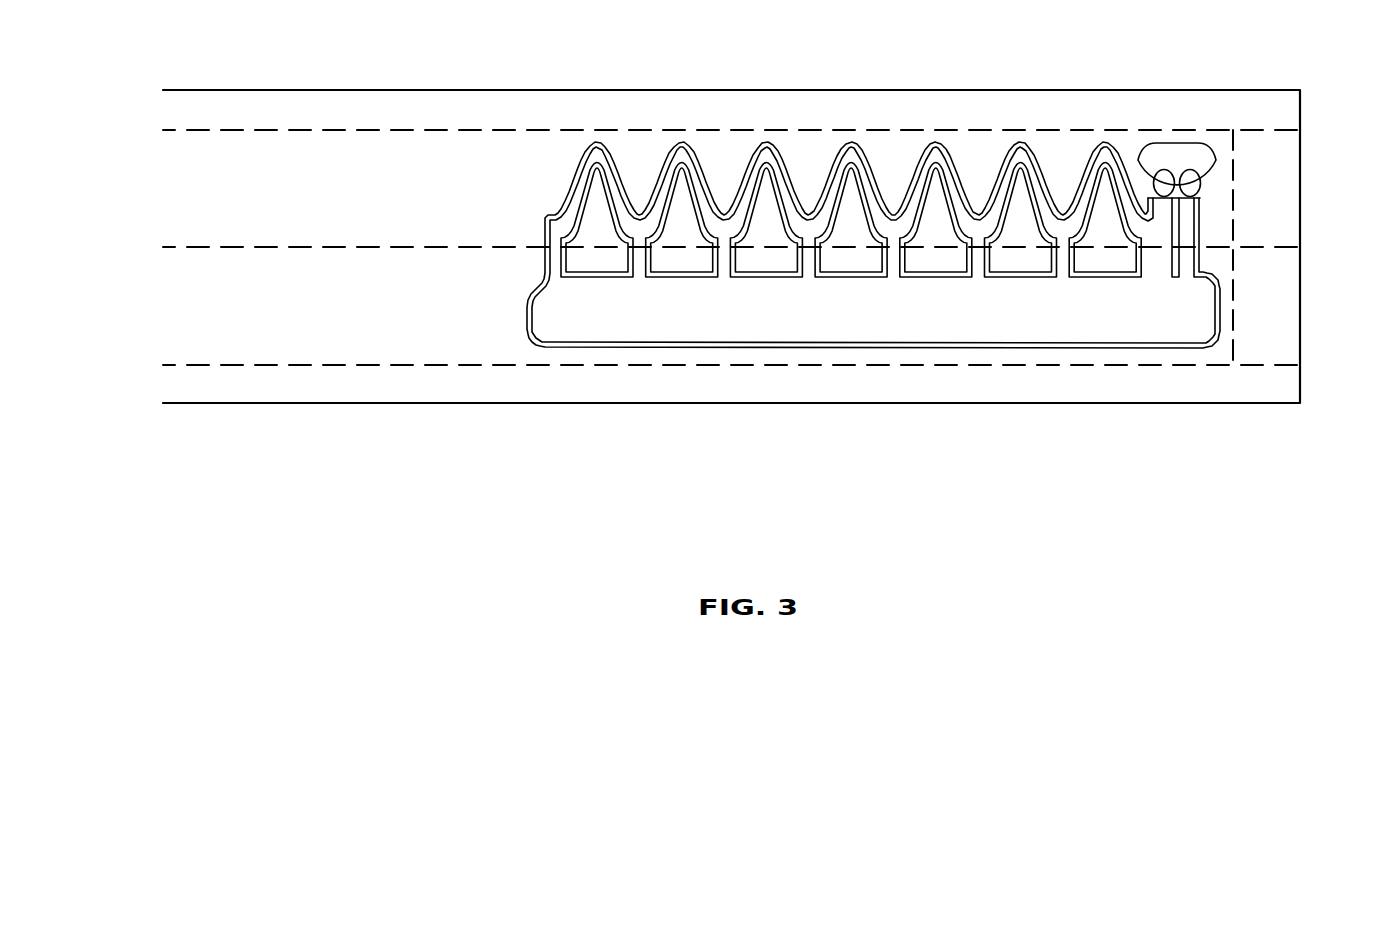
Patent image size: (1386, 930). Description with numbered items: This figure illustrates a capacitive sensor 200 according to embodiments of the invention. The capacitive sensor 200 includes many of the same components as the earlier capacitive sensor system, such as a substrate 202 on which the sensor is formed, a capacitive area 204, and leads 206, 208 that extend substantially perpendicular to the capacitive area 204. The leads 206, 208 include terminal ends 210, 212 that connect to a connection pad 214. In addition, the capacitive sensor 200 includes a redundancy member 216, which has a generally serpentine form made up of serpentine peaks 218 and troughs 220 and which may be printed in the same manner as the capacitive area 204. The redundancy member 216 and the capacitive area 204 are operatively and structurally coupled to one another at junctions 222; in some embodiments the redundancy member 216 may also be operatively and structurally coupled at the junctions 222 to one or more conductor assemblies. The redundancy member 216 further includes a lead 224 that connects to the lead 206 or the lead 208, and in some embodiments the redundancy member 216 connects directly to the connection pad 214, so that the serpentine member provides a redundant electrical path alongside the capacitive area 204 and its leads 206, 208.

The capacitive sensor 200 is at (156, 270).
The substrate 202 is at (280, 199).
The capacitive area 204 is at (745, 318).
The lead 206 is at (1162, 217).
The lead 208 is at (1190, 240).
The terminal end 210 is at (1164, 178).
The terminal end 212 is at (1192, 181).
The connection pad 214 is at (1183, 157).
The redundancy member 216 is at (558, 175).
The serpentine peaks 218 is at (599, 140).
The troughs 220 is at (712, 200).
The junctions 222 is at (813, 255).
The lead 224 is at (1152, 240).